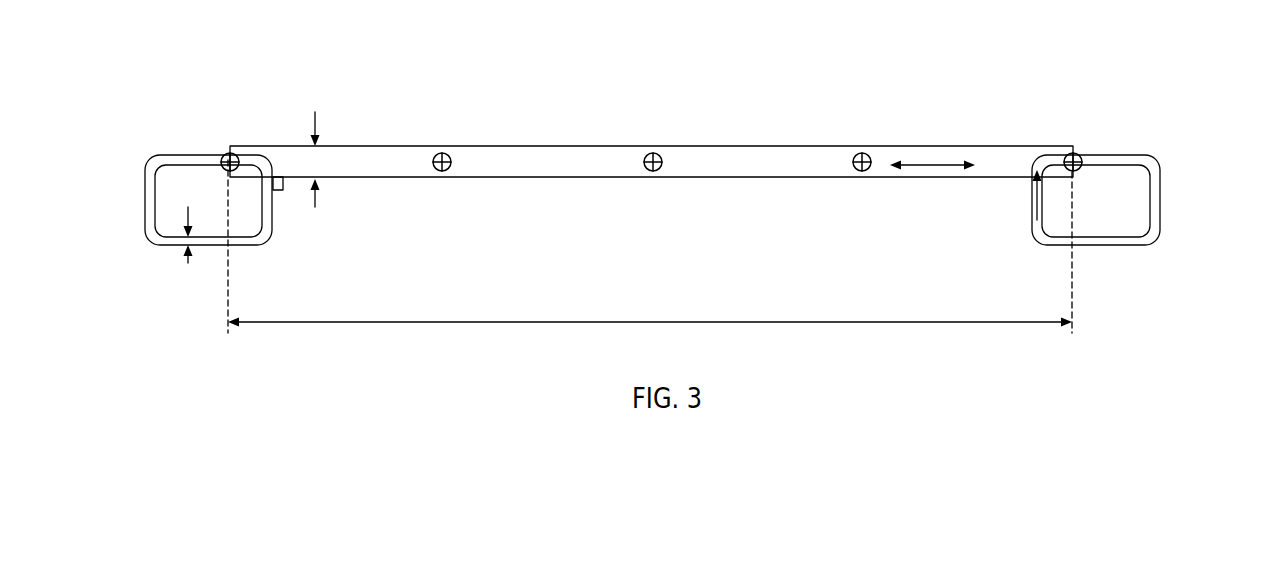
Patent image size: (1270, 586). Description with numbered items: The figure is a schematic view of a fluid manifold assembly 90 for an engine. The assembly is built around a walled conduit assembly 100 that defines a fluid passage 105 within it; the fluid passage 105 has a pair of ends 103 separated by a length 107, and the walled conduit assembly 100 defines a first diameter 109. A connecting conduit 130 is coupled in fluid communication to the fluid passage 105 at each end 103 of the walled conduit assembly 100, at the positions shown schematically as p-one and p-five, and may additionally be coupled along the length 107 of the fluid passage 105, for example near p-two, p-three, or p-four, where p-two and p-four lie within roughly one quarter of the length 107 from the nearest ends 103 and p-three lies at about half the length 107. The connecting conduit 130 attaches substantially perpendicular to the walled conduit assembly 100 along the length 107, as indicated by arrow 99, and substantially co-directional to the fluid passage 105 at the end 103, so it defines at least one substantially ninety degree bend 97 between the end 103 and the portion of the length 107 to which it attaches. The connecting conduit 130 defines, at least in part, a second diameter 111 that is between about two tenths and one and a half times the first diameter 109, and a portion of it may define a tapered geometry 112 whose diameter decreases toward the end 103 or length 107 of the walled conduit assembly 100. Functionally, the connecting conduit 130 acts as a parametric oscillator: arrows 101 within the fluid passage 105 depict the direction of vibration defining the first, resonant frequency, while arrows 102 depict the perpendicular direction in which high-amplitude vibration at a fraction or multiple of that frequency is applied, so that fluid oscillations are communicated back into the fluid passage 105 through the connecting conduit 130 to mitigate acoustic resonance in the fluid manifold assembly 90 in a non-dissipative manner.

The fluid manifold assembly 90 is at (710, 65).
The substantially 90 degree bend 97 is at (163, 223).
The arrow indicating perpendicular coupling 99 is at (282, 200).
The walled conduit assembly 100 is at (543, 146).
The arrows depicting direction of vibration 101 is at (920, 165).
The arrows depicting perpendicular direction of applied vibration 102 is at (1035, 193).
The ends 103 is at (219, 147).
The fluid passage 105 is at (388, 174).
The length 107 is at (813, 322).
The first diameter 109 is at (333, 100).
The second diameter 111 is at (188, 267).
The tapered geometry 112 is at (150, 147).
The connecting conduit 130 is at (177, 157).